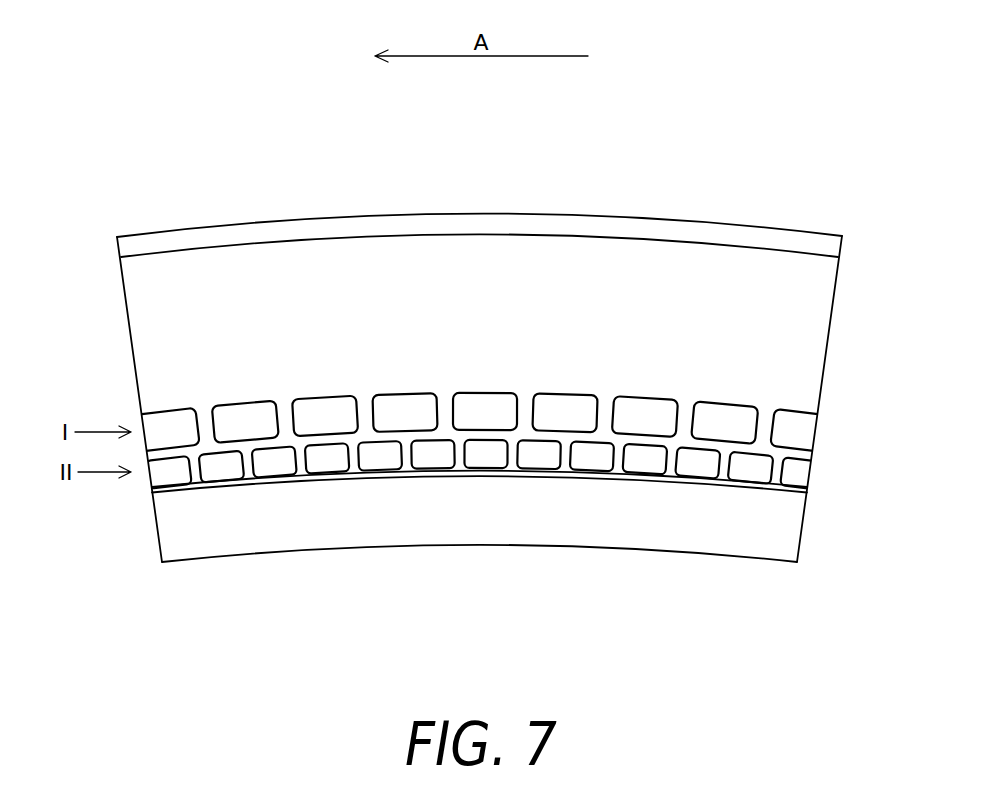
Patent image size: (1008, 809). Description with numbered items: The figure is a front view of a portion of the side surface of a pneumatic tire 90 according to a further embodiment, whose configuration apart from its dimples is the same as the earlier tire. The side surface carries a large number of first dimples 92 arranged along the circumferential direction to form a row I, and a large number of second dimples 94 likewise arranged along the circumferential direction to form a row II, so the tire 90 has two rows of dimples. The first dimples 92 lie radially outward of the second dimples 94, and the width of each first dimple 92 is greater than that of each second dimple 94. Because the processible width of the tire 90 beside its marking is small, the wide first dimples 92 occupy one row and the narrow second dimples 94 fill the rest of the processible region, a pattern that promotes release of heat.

The pneumatic tire 90 is at (668, 196).
The first dimples 92 is at (241, 410).
The second dimples 94 is at (330, 462).